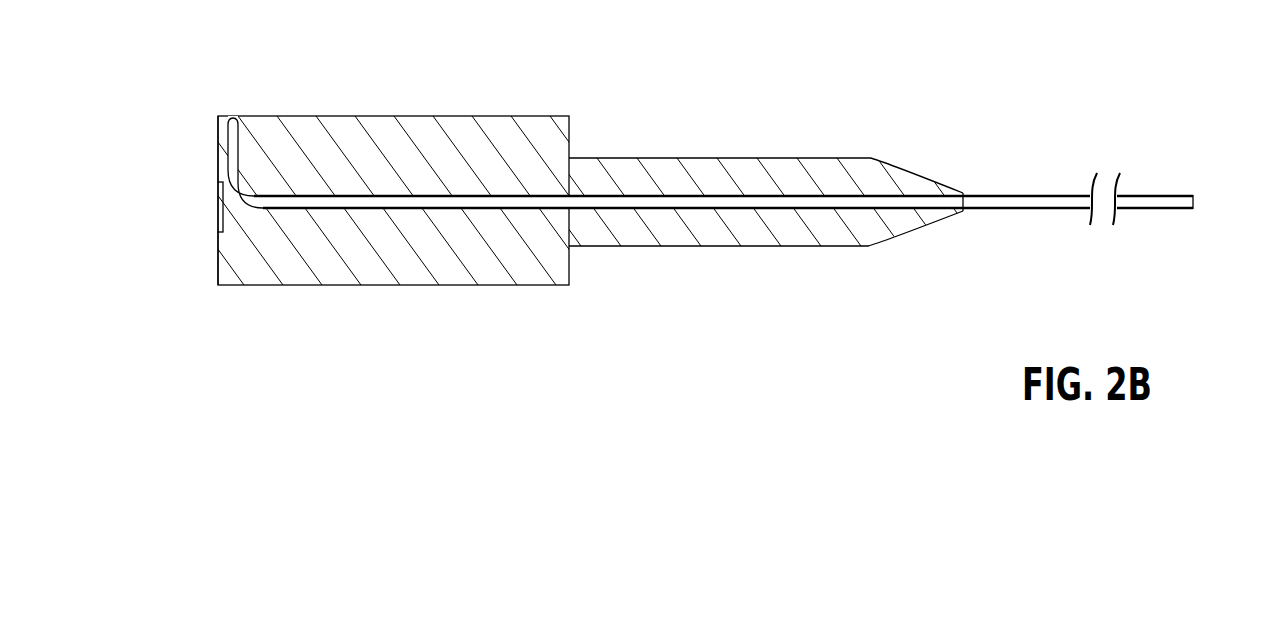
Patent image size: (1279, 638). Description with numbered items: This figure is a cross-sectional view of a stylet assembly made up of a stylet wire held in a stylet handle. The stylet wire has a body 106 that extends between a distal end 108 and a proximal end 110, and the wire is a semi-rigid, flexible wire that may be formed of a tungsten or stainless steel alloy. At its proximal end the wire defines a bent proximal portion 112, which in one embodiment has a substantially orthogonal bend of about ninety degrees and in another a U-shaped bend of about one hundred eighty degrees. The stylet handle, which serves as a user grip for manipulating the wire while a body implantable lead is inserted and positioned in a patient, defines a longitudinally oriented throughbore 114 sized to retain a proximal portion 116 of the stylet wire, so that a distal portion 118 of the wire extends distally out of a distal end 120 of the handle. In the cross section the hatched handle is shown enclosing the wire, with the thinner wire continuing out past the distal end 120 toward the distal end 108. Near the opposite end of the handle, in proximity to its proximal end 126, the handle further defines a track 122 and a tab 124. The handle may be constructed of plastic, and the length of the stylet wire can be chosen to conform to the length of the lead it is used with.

The body 106 is at (830, 205).
The distal end 108 is at (1193, 207).
The proximal end 110 is at (235, 117).
The bent proximal portion 112 is at (245, 208).
The throughbore 114 is at (698, 197).
The proximal portion 116 is at (1048, 195).
The distal portion 118 is at (585, 202).
The distal end 120 is at (963, 210).
The track 122 is at (218, 160).
The tab 124 is at (222, 206).
The proximal end 126 is at (213, 253).